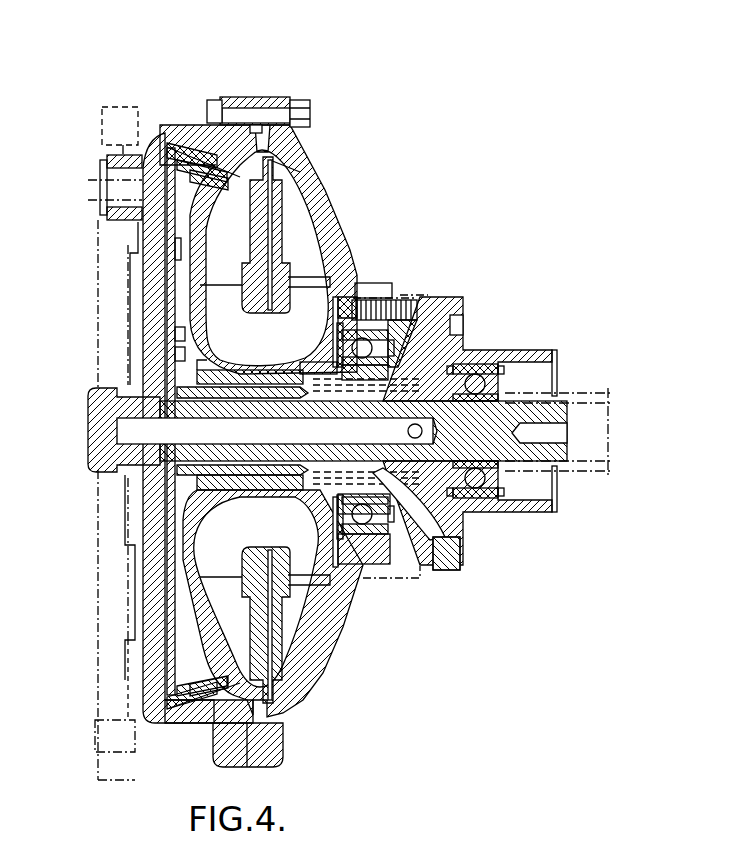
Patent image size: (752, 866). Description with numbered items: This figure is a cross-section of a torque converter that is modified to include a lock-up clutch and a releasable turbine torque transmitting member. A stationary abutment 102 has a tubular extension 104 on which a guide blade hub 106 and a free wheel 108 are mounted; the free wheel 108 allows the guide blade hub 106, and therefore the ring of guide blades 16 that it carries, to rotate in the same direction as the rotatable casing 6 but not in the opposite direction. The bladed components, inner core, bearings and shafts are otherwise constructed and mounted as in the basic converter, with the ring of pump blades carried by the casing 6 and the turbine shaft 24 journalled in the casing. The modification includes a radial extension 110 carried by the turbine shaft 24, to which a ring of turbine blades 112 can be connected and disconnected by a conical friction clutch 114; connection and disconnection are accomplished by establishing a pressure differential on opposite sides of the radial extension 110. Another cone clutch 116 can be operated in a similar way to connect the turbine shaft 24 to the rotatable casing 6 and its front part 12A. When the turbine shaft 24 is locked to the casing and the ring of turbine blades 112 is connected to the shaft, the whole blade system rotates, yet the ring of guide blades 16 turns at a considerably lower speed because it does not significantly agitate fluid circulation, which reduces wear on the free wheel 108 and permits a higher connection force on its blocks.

The rotatable casing 6 is at (313, 197).
The front part of rotatable casing 12A is at (153, 247).
The guide blades 16 is at (303, 284).
The turbine shaft 24 is at (530, 412).
The stationary abutment 102 is at (455, 298).
The tubular extension 104 is at (383, 302).
The guide blade hub 106 is at (354, 320).
The free wheel 108 is at (395, 286).
The radial extension 110 is at (177, 328).
The ring of turbine blades 112 is at (170, 143).
The conical friction clutch 114 is at (200, 170).
The cone clutch 116 is at (184, 162).